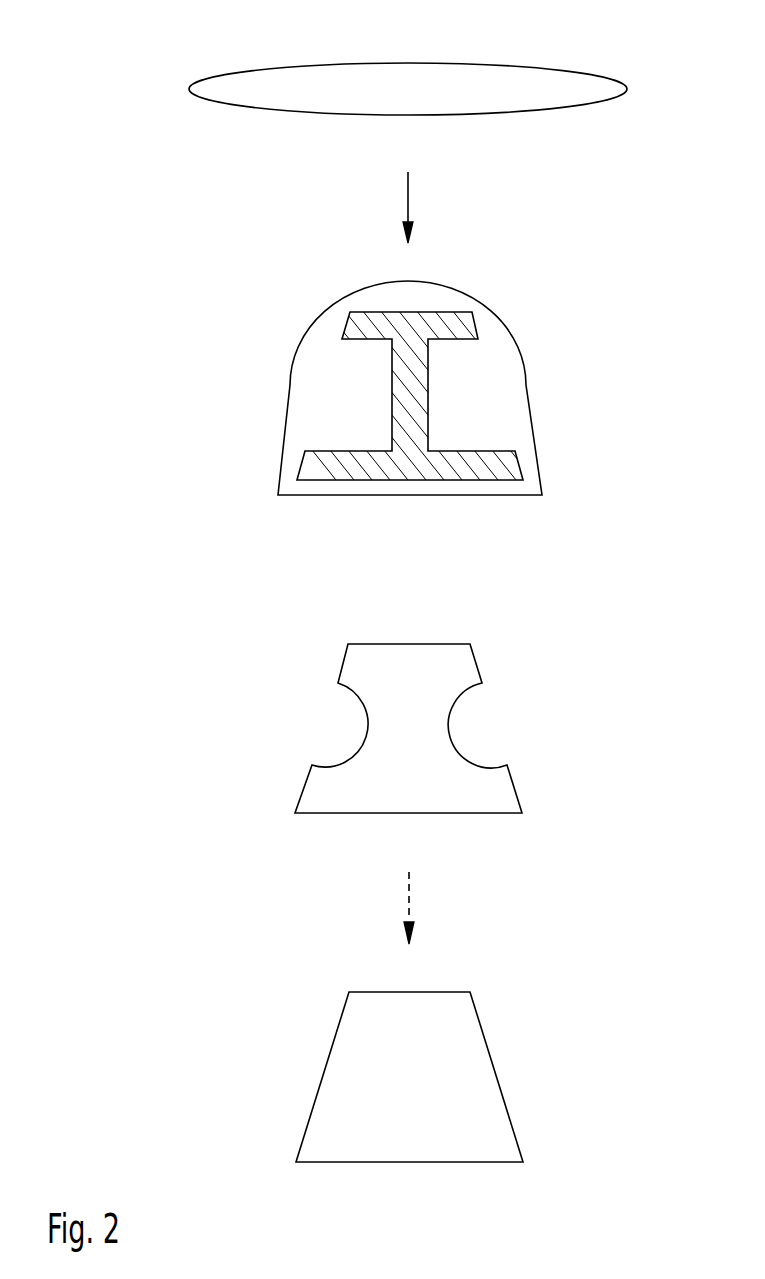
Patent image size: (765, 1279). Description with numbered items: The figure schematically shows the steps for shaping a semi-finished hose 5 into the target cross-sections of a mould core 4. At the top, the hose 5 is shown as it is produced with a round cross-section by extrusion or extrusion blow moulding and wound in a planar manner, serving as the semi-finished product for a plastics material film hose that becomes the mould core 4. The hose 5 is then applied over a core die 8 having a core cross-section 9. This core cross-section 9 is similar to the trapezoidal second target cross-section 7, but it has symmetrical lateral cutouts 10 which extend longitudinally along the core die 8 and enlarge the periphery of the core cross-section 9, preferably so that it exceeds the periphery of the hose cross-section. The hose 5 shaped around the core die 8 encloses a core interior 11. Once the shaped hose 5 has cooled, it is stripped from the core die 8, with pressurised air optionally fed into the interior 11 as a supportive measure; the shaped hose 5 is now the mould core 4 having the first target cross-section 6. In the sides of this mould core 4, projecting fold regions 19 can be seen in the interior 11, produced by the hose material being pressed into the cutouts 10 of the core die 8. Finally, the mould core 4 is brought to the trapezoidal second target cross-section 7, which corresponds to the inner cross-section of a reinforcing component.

The mould core 4 is at (515, 783).
The hose 5 is at (477, 63).
The first target cross-section 6 is at (255, 710).
The second target cross-section 7 is at (262, 1067).
The core die 8 is at (410, 468).
The core cross-section 9 is at (534, 304).
The cutouts 10 is at (365, 391).
The core interior 11 is at (308, 428).
The fold regions 19 is at (450, 722).